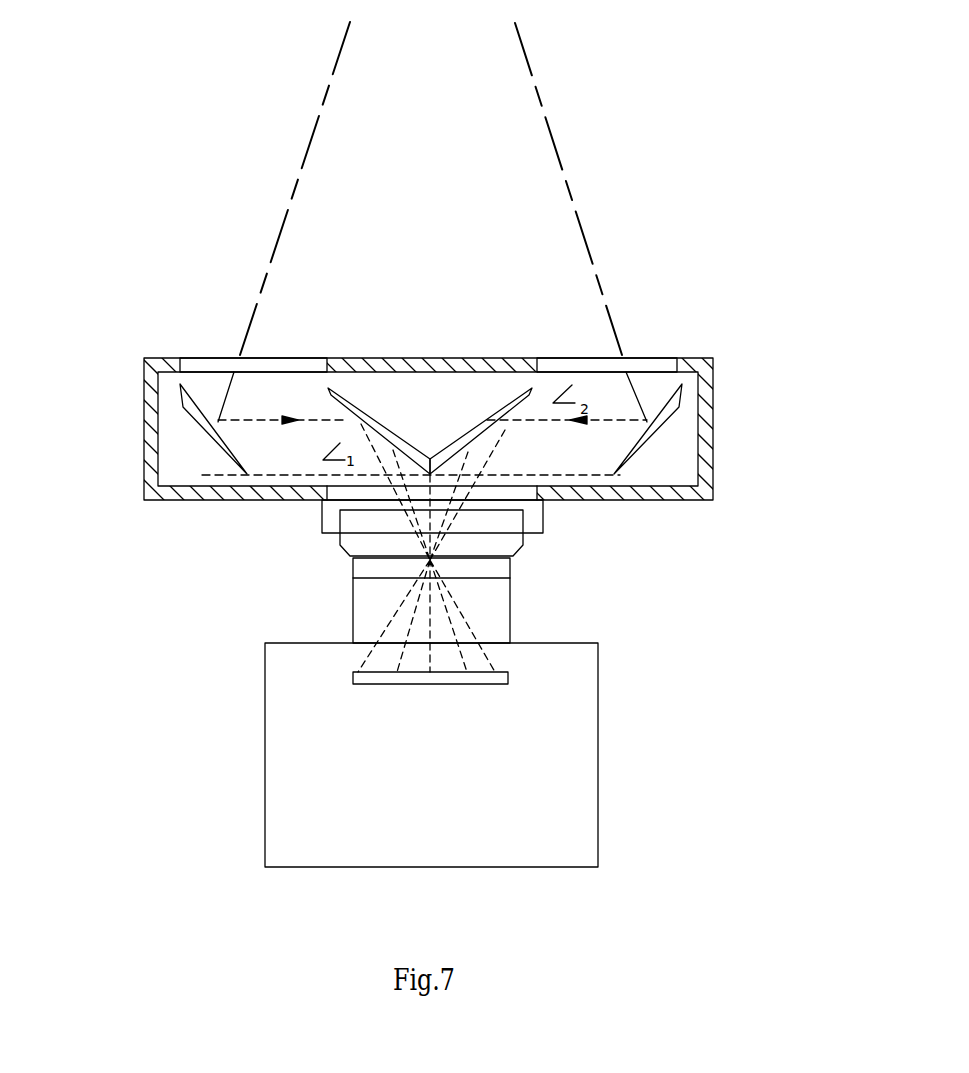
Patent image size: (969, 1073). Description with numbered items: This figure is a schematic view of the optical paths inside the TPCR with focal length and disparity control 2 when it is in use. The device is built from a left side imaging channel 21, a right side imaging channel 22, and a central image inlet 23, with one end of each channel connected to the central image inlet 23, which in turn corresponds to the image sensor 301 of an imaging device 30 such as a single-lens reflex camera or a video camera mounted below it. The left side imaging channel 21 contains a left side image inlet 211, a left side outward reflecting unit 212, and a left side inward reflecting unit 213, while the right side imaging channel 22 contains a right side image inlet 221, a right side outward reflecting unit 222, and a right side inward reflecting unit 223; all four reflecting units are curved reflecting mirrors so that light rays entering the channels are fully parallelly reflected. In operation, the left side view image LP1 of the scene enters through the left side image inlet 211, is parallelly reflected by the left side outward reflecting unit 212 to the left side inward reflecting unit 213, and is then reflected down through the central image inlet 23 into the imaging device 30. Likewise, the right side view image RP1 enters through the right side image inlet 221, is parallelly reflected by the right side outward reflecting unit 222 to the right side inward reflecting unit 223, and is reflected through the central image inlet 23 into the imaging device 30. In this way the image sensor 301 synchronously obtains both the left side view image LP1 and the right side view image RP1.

The TPCR with focal length and disparity control 2 is at (145, 427).
The left side imaging channel 21 is at (273, 450).
The left side image inlet 211 is at (210, 363).
The left side outward reflecting unit 212 is at (208, 438).
The left side inward reflecting unit 213 is at (386, 437).
The right side imaging channel 22 is at (548, 457).
The right side image inlet 221 is at (640, 367).
The right side outward reflecting unit 222 is at (628, 450).
The right side inward reflecting unit 223 is at (497, 433).
The central image inlet 23 is at (327, 497).
The imaging device 30 is at (265, 755).
The image sensor 301 is at (433, 678).
The left side view image LP1 is at (282, 232).
The right side view image RP1 is at (583, 233).